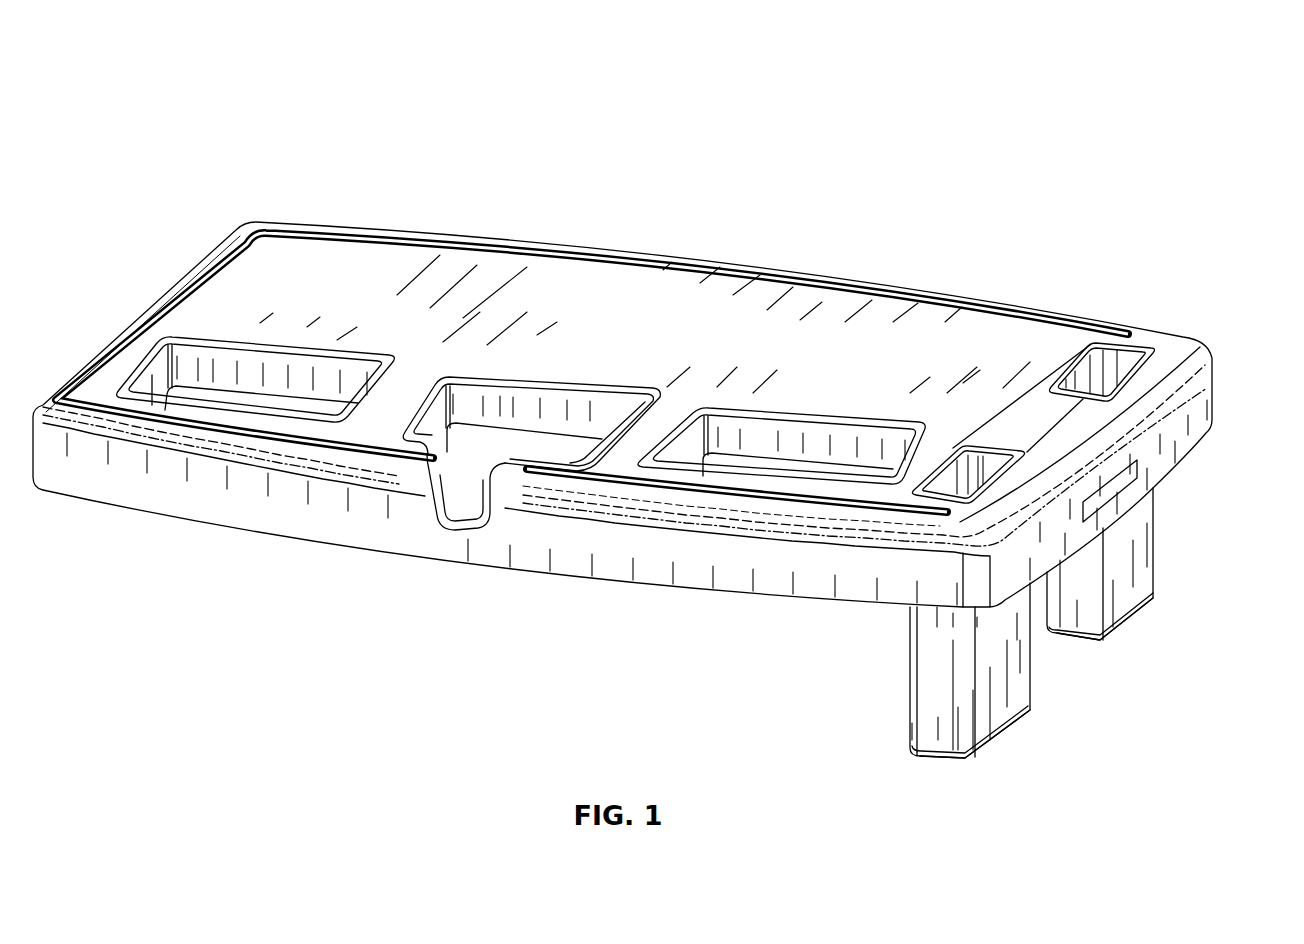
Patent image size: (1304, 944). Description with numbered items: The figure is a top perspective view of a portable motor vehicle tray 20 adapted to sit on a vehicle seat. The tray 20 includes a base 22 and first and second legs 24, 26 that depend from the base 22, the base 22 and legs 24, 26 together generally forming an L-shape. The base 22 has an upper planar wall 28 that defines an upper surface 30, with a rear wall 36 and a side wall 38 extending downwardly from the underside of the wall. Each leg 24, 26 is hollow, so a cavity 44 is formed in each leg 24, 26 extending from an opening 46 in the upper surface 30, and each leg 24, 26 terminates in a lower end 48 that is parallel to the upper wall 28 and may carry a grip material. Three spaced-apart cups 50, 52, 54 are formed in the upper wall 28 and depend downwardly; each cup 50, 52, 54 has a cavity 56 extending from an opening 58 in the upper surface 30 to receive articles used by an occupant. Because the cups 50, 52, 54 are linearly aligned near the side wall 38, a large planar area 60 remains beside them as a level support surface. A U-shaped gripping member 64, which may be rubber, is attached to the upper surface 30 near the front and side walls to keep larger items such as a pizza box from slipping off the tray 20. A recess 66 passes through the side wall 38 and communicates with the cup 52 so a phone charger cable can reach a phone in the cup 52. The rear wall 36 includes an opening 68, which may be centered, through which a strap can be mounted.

The motor vehicle tray 20 is at (1043, 100).
The base 22 is at (549, 274).
The first leg 24 is at (1010, 664).
The second leg 26 is at (1137, 555).
The upper planar wall 28 is at (384, 258).
The upper surface 30 is at (730, 355).
The rear wall 36 is at (1197, 407).
The side wall 38 is at (677, 552).
The cavity 44 is at (991, 473).
The opening 46 is at (947, 453).
The lower end 48 is at (1113, 641).
The cup 50 is at (217, 393).
The cup 52 is at (470, 443).
The cup 54 is at (764, 450).
The cavity 56 is at (577, 453).
The opening 58 is at (289, 341).
The planar area 60 is at (386, 318).
The gripping member 64 is at (250, 244).
The recess 66 is at (455, 527).
The opening 68 is at (1140, 467).